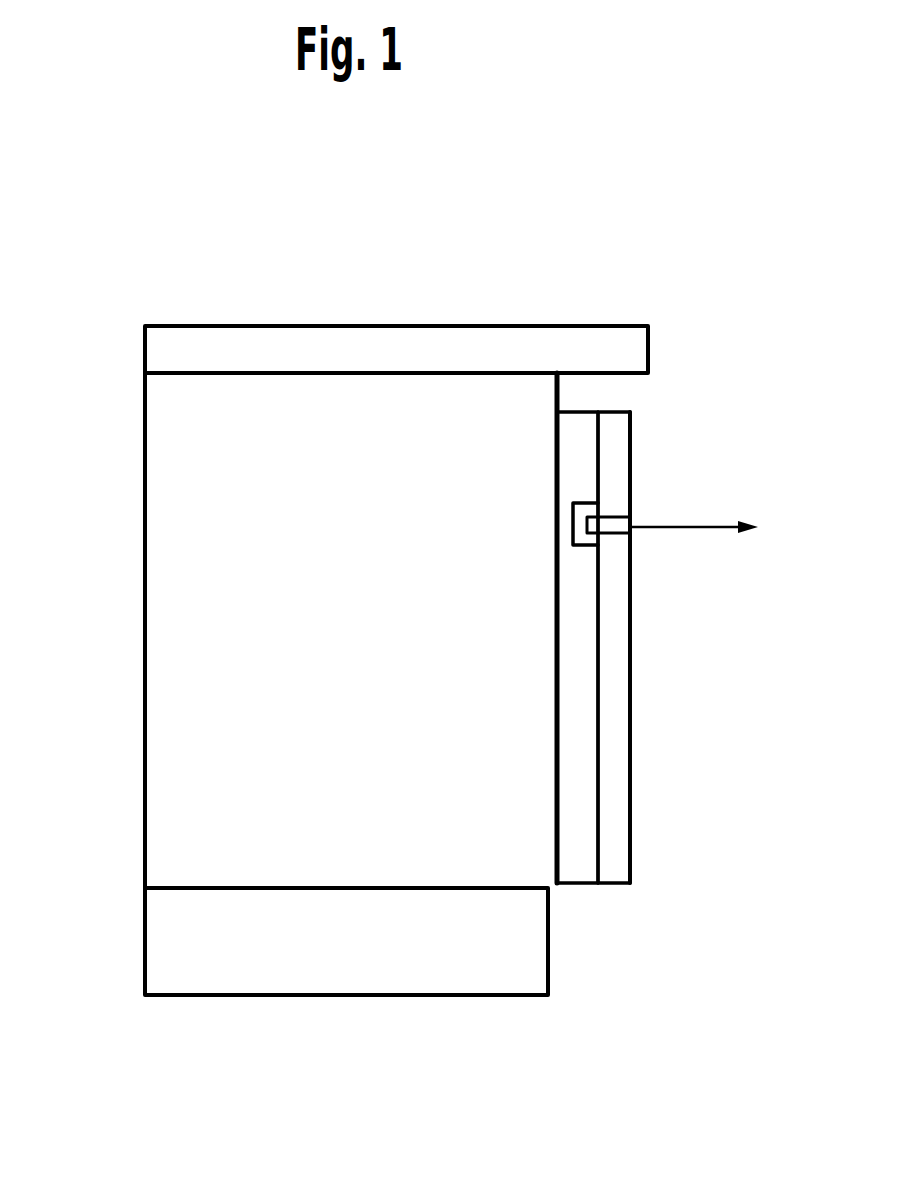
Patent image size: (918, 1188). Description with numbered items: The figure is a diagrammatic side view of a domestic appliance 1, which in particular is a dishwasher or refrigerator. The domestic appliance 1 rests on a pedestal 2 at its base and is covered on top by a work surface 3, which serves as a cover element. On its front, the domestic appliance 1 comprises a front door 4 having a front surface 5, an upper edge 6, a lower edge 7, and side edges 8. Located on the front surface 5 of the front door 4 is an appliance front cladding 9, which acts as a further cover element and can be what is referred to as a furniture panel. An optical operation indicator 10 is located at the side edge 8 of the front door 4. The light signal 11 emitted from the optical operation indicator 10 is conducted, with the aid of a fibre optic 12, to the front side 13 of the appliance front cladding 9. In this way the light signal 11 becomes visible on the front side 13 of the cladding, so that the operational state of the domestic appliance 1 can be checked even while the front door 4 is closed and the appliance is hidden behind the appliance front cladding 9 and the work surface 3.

The domestic appliance 1 is at (170, 455).
The pedestal 2 is at (168, 948).
The work surface 3 is at (325, 350).
The front door 4 is at (578, 717).
The front surface 5 is at (598, 769).
The upper edge 6 is at (573, 412).
The lower edge 7 is at (580, 885).
The side edge 8 is at (578, 626).
The appliance front cladding 9 is at (612, 862).
The optical operation indicator 10 is at (580, 508).
The light signal 11 is at (703, 527).
The fibre optic 12 is at (612, 533).
The front side 13 is at (630, 817).